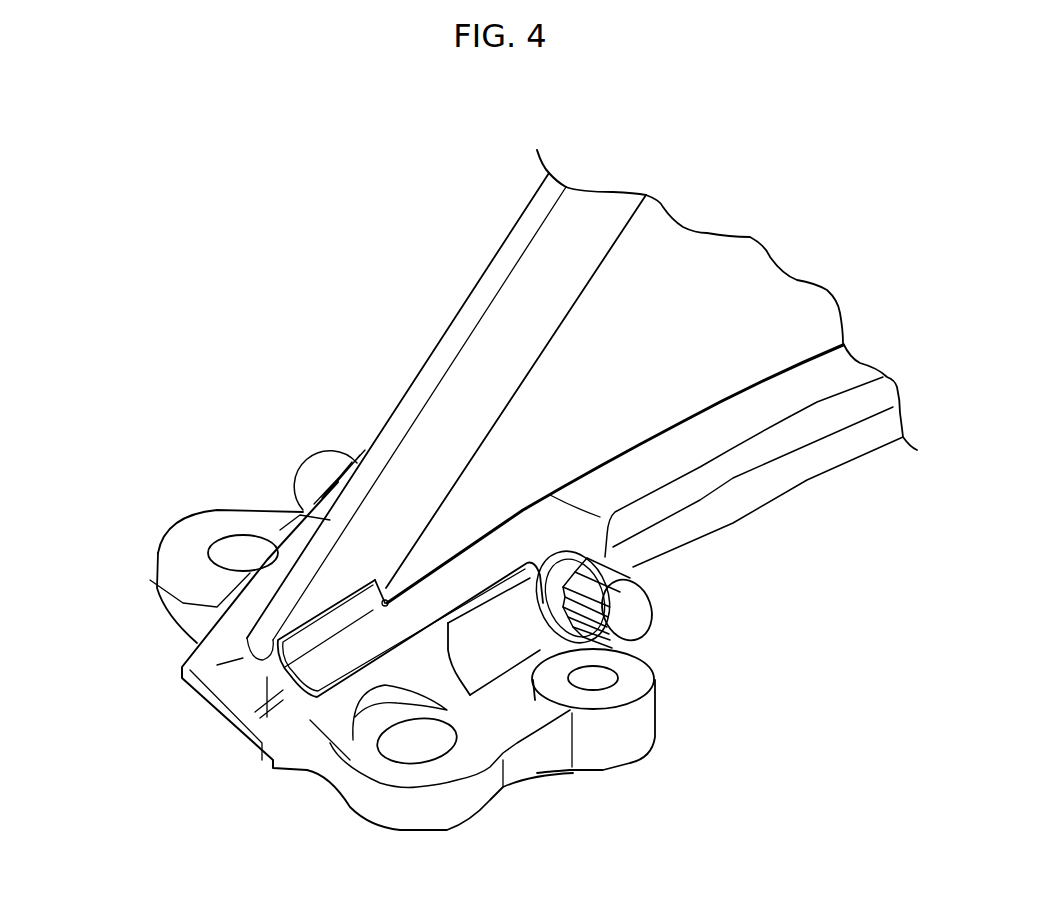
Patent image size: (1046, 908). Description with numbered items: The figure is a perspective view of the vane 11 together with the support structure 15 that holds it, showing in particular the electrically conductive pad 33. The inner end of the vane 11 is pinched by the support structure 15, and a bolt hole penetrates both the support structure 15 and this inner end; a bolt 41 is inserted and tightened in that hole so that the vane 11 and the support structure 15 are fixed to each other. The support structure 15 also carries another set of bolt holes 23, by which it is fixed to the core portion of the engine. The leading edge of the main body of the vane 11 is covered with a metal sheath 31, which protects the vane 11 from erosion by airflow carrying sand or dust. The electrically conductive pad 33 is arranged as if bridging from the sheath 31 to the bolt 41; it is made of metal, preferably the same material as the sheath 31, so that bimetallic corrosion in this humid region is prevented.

The vane 11 is at (625, 273).
The sheath 31 is at (495, 308).
The support structure 15 is at (187, 570).
The bolt holes 23 is at (233, 550).
The electrically conductive pad 33 is at (312, 680).
The bolt 41 is at (630, 610).